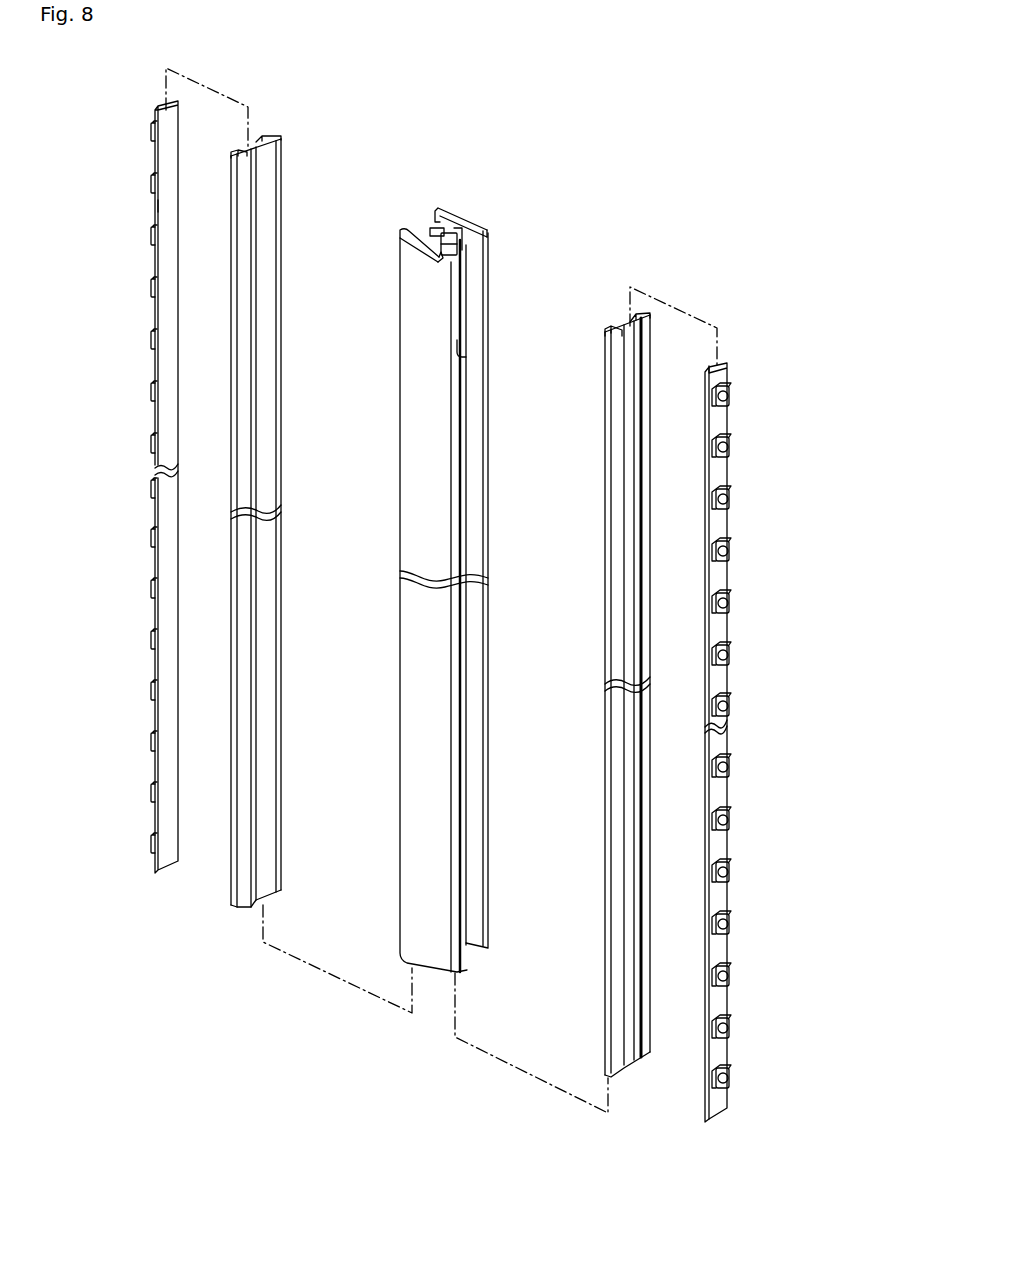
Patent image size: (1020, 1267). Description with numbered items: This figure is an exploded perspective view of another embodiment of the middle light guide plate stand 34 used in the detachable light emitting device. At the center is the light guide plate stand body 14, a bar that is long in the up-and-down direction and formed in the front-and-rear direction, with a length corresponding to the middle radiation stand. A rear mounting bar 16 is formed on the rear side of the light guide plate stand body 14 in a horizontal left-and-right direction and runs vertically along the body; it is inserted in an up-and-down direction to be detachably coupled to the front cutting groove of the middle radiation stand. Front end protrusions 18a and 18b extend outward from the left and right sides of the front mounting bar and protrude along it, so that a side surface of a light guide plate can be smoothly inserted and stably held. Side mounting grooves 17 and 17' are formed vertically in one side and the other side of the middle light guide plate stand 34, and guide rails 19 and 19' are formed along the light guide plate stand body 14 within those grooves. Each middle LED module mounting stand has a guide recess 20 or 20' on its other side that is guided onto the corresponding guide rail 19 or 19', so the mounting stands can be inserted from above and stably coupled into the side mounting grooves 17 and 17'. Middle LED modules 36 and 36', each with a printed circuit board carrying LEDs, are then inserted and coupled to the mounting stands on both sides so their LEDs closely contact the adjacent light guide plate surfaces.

The light guide plate stand body 14 is at (450, 218).
The rear mounting bar 16 is at (489, 234).
The side mounting groove 17 is at (512, 606).
The side mounting groove 17' is at (371, 228).
The front end protrusion 18a is at (400, 233).
The front end protrusion 18b is at (463, 356).
The guide rail 19 is at (487, 269).
The guide rail 19' is at (427, 199).
The guide recess 20 is at (610, 660).
The guide recess 20' is at (303, 519).
The middle light guide plate stand 34 is at (480, 210).
The middle LED module 36 is at (772, 724).
The middle LED module 36' is at (113, 464).